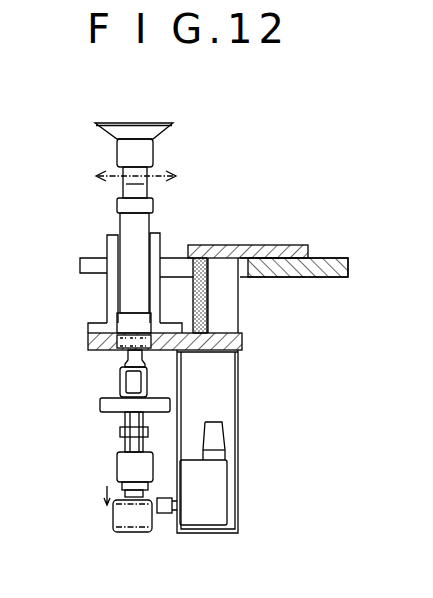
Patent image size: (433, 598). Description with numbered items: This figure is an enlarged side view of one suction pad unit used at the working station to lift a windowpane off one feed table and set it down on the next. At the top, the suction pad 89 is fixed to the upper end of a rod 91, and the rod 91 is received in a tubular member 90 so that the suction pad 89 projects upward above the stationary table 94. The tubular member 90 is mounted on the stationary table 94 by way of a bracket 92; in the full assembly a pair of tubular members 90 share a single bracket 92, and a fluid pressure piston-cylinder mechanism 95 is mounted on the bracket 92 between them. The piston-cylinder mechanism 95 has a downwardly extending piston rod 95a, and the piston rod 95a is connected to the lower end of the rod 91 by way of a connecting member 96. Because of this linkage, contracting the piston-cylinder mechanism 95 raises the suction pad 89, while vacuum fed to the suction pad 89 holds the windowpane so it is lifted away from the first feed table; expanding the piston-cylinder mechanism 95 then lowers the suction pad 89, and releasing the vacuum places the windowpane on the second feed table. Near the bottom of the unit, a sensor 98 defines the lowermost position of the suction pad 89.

The suction pad 89 is at (150, 125).
The rod 91 is at (148, 167).
The fluid pressure piston-cylinder mechanism 95 is at (141, 252).
The tubular member 90 is at (112, 294).
The bracket 92 is at (210, 309).
The stationary table 94 is at (333, 258).
The connecting member 96 is at (98, 407).
The piston rod 95a is at (120, 448).
The sensor 98 is at (155, 513).